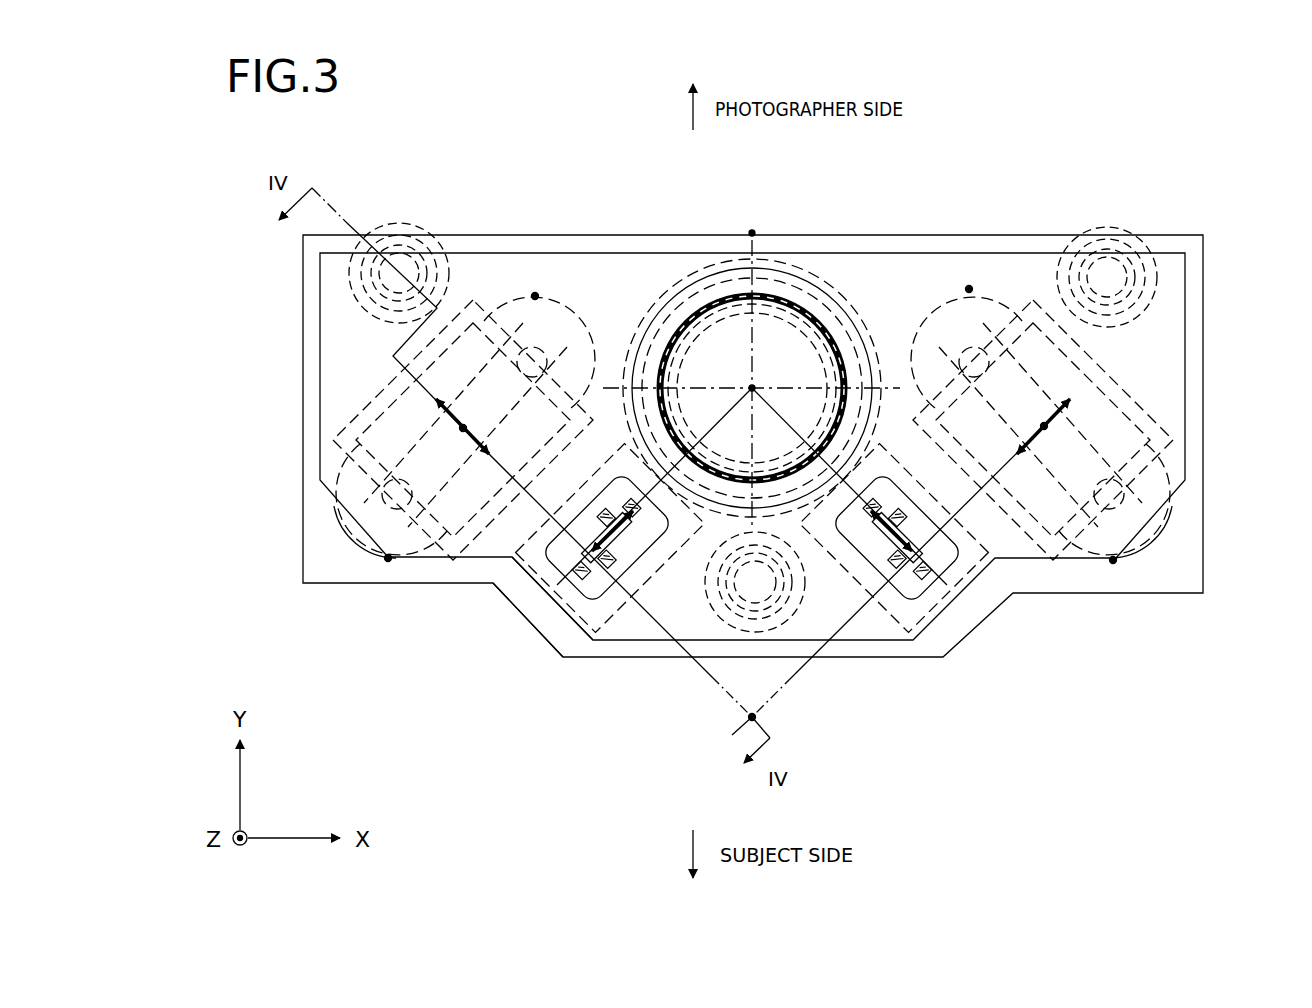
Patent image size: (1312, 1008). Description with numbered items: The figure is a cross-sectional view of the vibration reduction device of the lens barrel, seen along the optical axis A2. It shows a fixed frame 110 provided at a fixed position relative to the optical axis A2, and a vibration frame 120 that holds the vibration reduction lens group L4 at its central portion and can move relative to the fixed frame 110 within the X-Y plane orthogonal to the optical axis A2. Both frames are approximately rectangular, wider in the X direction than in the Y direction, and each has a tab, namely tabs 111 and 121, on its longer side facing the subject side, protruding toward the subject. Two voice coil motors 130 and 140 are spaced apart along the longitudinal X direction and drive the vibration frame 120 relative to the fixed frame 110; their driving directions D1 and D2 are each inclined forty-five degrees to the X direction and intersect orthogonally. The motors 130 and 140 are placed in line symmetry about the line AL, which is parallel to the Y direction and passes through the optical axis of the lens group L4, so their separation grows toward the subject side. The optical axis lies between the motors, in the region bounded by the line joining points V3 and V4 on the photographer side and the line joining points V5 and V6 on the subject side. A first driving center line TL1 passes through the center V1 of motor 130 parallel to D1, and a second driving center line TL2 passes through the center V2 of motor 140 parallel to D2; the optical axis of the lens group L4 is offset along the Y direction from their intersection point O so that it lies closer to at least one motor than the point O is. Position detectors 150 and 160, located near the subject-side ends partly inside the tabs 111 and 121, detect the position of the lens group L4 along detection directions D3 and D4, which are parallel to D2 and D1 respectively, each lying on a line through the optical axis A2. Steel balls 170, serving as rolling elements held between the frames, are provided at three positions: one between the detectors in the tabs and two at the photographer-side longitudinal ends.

The fixed frame 110 is at (553, 235).
The tab 111 is at (540, 632).
The vibration frame 120 is at (598, 253).
The tab 121 is at (535, 582).
The voice coil motor 130 is at (458, 507).
The voice coil motor 140 is at (1043, 495).
The position detector 150 is at (595, 592).
The position detector 160 is at (909, 592).
The steel balls 170 is at (1080, 235).
The vibration reduction lens group L4 is at (775, 342).
The optical axis A2 is at (752, 388).
The line AL is at (752, 233).
The center of the VCM 130 V1 is at (463, 428).
The center of the VCM 140 V2 is at (1044, 426).
The point of the VCM 130 farthest to the photographer side V3 is at (535, 296).
The point of the VCM 140 farthest to the photographer side V4 is at (969, 289).
The point of the VCM 130 farthest to the subject side V5 is at (388, 558).
The point of the VCM 140 farthest to the subject side V6 is at (1113, 560).
The driving direction D1 is at (464, 426).
The driving direction D2 is at (1045, 425).
The detection direction D3 is at (608, 537).
The detection direction D4 is at (896, 537).
The first driving center line TL1 is at (660, 625).
The second driving center line TL2 is at (837, 633).
The intersection point O is at (758, 717).